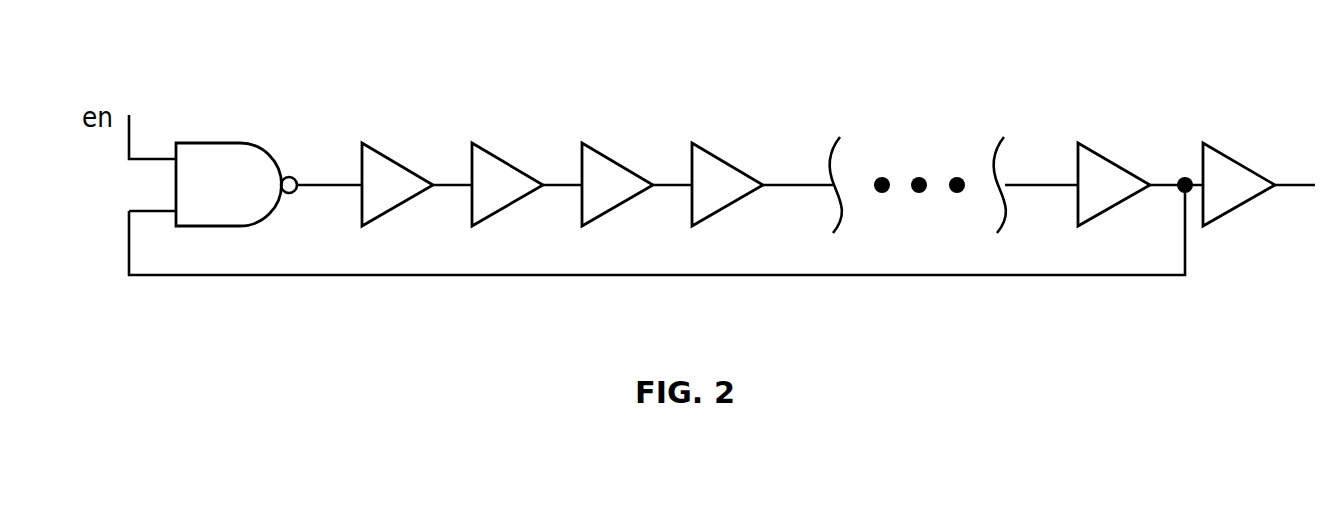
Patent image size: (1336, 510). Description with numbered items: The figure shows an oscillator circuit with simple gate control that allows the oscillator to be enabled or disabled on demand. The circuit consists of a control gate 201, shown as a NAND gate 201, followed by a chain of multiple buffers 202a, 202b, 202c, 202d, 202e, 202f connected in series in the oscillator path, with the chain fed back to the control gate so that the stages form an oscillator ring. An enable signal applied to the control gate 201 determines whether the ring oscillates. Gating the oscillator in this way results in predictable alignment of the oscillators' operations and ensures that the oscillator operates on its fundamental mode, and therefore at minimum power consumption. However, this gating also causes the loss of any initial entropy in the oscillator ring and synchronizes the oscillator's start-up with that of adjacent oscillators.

The control gate 201 is at (225, 143).
The buffer 202a is at (384, 155).
The buffer 202b is at (494, 155).
The buffer 202c is at (604, 155).
The buffer 202d is at (714, 155).
The buffer 202e is at (1101, 155).
The buffer 202f is at (1226, 155).